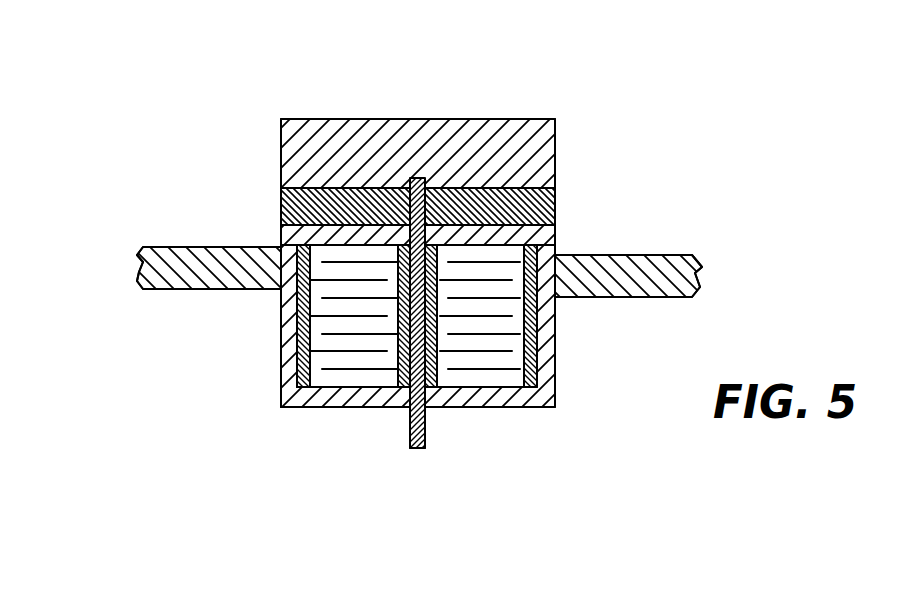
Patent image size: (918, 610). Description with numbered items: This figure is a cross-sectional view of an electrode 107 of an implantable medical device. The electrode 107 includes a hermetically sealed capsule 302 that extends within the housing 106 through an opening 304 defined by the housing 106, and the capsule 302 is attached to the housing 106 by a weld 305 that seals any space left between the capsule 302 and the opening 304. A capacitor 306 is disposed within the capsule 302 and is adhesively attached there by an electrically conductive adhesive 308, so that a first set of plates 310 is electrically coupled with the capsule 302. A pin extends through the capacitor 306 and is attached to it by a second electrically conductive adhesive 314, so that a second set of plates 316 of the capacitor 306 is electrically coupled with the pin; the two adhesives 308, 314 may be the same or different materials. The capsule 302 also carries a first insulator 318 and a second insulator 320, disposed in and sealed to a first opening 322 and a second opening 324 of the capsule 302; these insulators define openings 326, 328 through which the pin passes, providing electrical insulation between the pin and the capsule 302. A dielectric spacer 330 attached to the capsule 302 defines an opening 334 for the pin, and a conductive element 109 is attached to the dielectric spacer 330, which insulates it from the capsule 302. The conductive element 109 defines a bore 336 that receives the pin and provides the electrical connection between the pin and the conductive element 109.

The electrode 107 is at (133, 118).
The conductive element 109 is at (522, 137).
The housing 106 is at (653, 257).
The hermetically sealed capsule 302 is at (554, 385).
The opening 304 is at (545, 305).
The weld 305 is at (556, 255).
The capacitor 306 is at (280, 247).
The electrically conductive adhesive 308 is at (522, 323).
The first set of plates 310 is at (333, 370).
The electrically conductive adhesive 314 is at (298, 312).
The second set of plates 316 is at (470, 347).
The first insulator 318 is at (385, 188).
The second insulator 320 is at (390, 407).
The first opening 322 is at (400, 225).
The second opening 324 is at (371, 391).
The opening 326 is at (407, 180).
The opening 328 is at (430, 423).
The dielectric spacer 330 is at (556, 203).
The opening 334 is at (423, 177).
The bore 336 is at (418, 176).